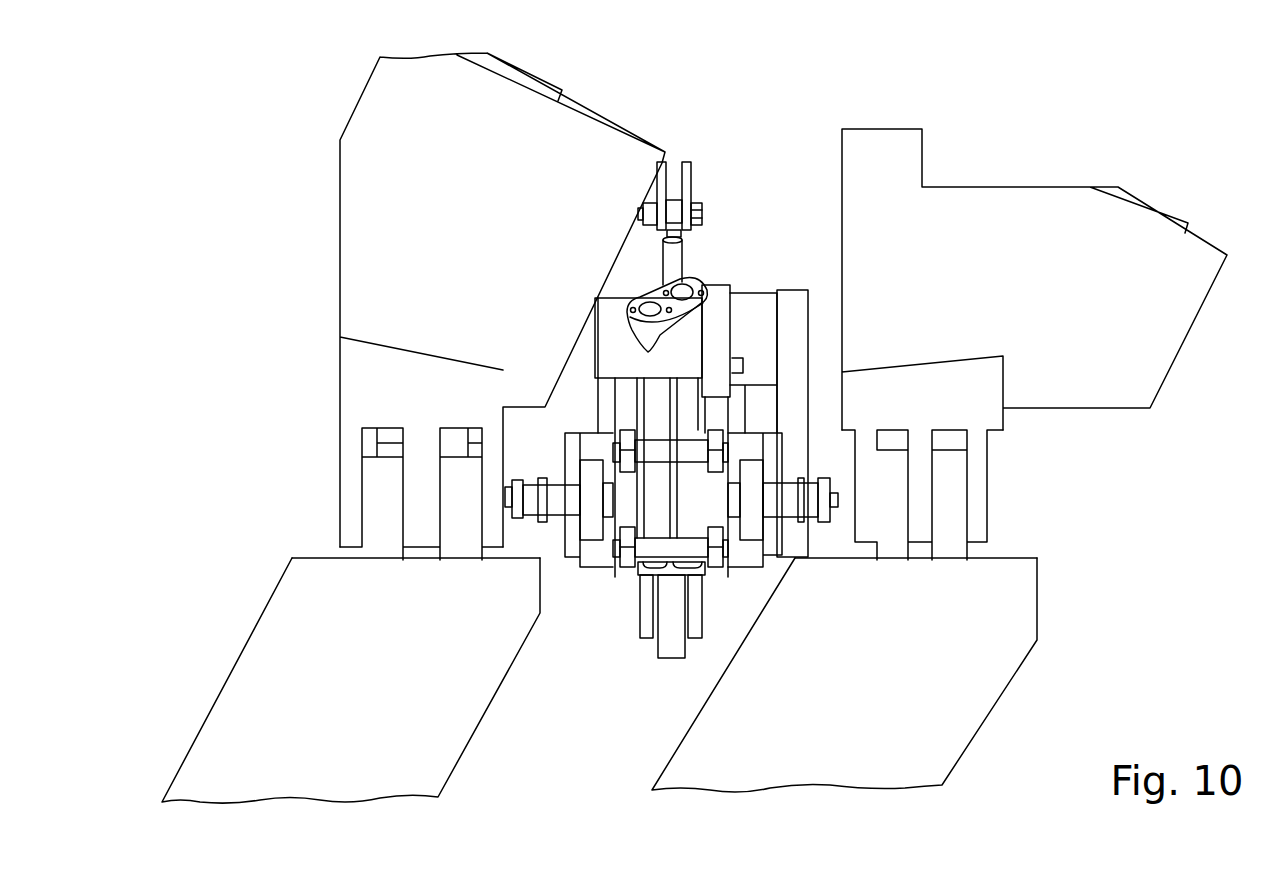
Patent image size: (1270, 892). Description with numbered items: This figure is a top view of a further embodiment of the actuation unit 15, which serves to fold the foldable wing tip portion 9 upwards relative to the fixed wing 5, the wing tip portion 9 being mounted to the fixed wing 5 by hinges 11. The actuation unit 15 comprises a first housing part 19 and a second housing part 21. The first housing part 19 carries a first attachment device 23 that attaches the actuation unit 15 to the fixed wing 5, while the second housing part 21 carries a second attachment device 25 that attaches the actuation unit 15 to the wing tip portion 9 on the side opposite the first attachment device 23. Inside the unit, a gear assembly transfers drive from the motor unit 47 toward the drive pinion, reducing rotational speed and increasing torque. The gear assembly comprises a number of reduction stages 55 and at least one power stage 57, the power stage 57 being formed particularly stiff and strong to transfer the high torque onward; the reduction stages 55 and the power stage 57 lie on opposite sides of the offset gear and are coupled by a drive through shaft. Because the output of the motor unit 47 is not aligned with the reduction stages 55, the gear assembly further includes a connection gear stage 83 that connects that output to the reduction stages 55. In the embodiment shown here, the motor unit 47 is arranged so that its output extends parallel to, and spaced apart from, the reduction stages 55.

The fixed wing 5 is at (862, 158).
The foldable wing tip portion 9 is at (443, 753).
The hinges 11 is at (372, 487).
The actuation unit 15 is at (588, 658).
The first housing part 19 is at (603, 395).
The second housing part 21 is at (657, 525).
The first attachment device 23 is at (700, 213).
The second attachment device 25 is at (672, 652).
The motor unit 47 is at (757, 312).
The reduction stages 55 is at (753, 532).
The power stage 57 is at (570, 463).
The connection gear stage 83 is at (797, 312).